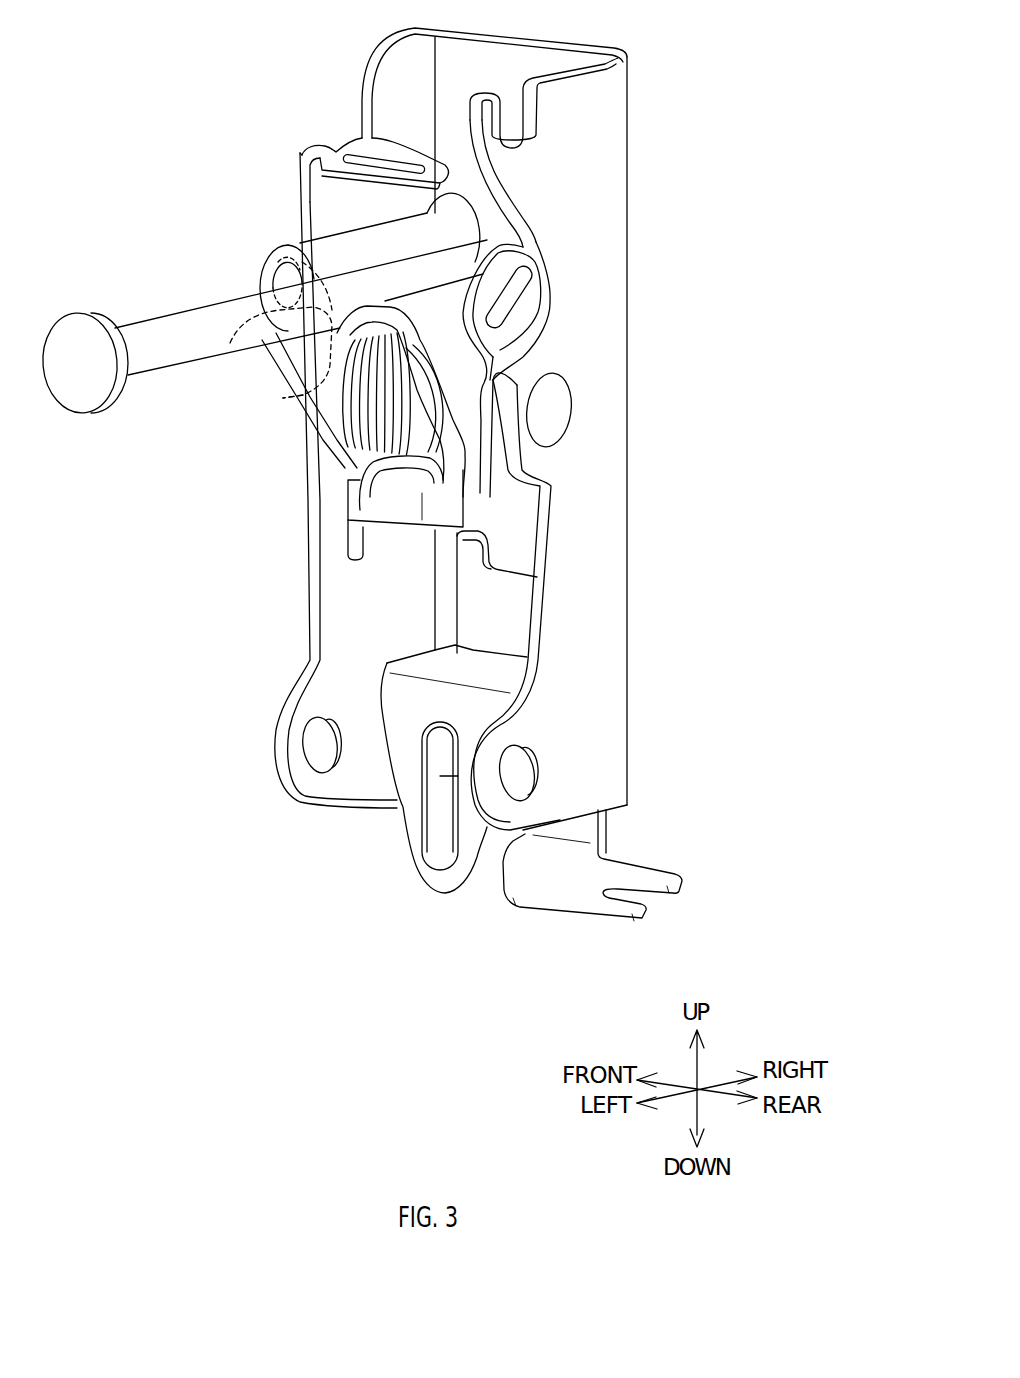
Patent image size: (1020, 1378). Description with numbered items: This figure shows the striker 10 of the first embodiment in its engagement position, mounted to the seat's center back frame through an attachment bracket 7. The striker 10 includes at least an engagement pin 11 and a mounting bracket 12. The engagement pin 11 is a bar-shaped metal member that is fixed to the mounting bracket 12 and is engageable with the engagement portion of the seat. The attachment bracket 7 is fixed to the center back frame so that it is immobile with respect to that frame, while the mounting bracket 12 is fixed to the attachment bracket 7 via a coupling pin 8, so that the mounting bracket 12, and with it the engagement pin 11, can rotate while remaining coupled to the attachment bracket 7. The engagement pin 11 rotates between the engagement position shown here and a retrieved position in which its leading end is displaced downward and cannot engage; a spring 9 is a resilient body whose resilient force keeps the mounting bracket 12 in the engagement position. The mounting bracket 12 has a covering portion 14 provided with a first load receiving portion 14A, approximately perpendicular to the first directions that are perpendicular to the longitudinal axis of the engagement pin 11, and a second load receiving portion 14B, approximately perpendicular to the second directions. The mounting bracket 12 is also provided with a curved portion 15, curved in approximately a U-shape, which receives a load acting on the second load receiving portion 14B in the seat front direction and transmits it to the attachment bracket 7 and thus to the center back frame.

The attachment bracket 7 is at (607, 275).
The coupling pin 8 is at (552, 408).
The spring 9 is at (345, 435).
The striker 10 is at (218, 282).
The engagement pin 11 is at (138, 333).
The mounting bracket 12 is at (307, 363).
The covering portion 14 is at (245, 318).
The first load receiving portion 14A is at (318, 375).
The second load receiving portion 14B is at (280, 263).
The curved portion 15 is at (332, 248).